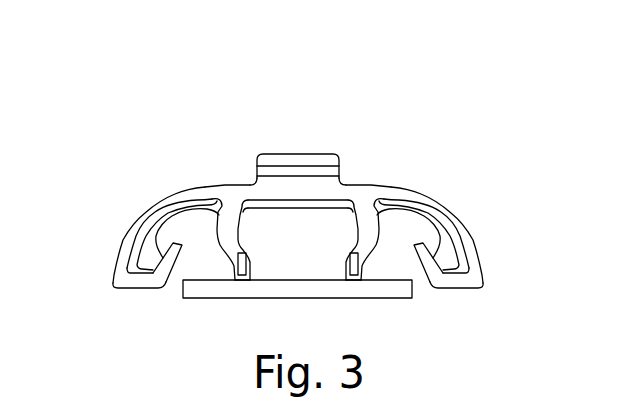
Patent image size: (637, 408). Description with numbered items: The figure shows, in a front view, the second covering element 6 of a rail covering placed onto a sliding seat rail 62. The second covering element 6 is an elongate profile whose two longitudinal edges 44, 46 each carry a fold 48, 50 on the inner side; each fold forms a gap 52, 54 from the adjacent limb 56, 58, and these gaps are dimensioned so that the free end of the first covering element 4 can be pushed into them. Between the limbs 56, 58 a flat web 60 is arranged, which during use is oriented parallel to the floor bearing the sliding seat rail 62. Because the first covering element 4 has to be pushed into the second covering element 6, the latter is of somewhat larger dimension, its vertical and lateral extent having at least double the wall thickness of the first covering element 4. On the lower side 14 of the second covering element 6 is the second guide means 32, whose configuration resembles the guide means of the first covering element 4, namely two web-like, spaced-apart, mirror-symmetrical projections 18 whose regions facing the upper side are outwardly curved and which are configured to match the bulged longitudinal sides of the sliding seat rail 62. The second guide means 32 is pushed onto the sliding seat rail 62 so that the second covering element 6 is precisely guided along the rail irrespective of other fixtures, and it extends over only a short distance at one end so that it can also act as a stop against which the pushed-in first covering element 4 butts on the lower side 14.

The first covering element 4 is at (432, 215).
The second covering element 6 is at (195, 193).
The lower side 14 is at (400, 250).
The projections 18 is at (230, 223).
The second guide means 32 is at (231, 264).
The longitudinal edge 44 is at (115, 288).
The longitudinal edge 46 is at (483, 292).
The fold 48 is at (170, 262).
The fold 50 is at (430, 268).
The gap 52 is at (137, 245).
The gap 54 is at (463, 243).
The limb 56 is at (142, 197).
The limb 58 is at (462, 202).
The flat web 60 is at (292, 160).
The sliding seat rail 62 is at (320, 230).